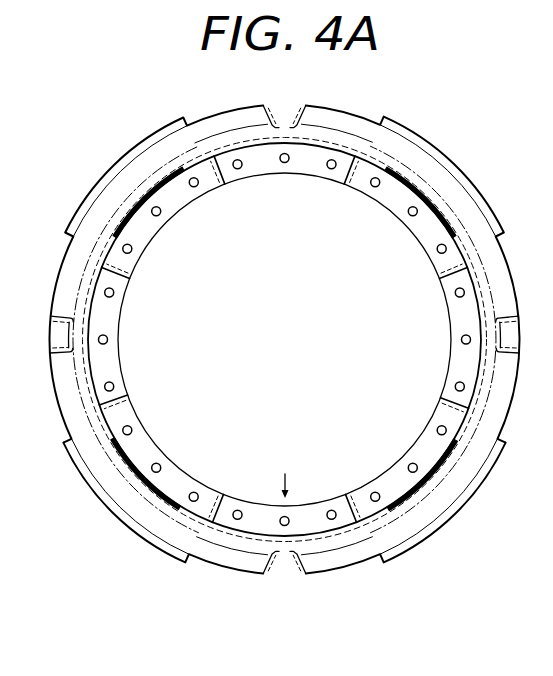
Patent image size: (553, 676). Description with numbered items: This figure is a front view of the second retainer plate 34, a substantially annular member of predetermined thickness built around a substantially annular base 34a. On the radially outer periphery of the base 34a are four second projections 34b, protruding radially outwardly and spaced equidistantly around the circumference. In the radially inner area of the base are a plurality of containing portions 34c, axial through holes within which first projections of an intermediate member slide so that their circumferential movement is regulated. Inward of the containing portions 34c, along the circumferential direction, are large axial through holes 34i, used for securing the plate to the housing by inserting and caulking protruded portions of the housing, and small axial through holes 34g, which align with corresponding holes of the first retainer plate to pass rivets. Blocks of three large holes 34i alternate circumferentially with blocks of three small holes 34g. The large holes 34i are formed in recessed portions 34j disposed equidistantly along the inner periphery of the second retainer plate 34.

The second retainer plate 34 is at (412, 93).
The base 34a is at (284, 128).
The second projections 34b is at (432, 148).
The containing portions 34c is at (160, 188).
The small axial through holes 34g is at (127, 247).
The large axial through holes 34i is at (238, 164).
The recessed portions 34j is at (303, 523).